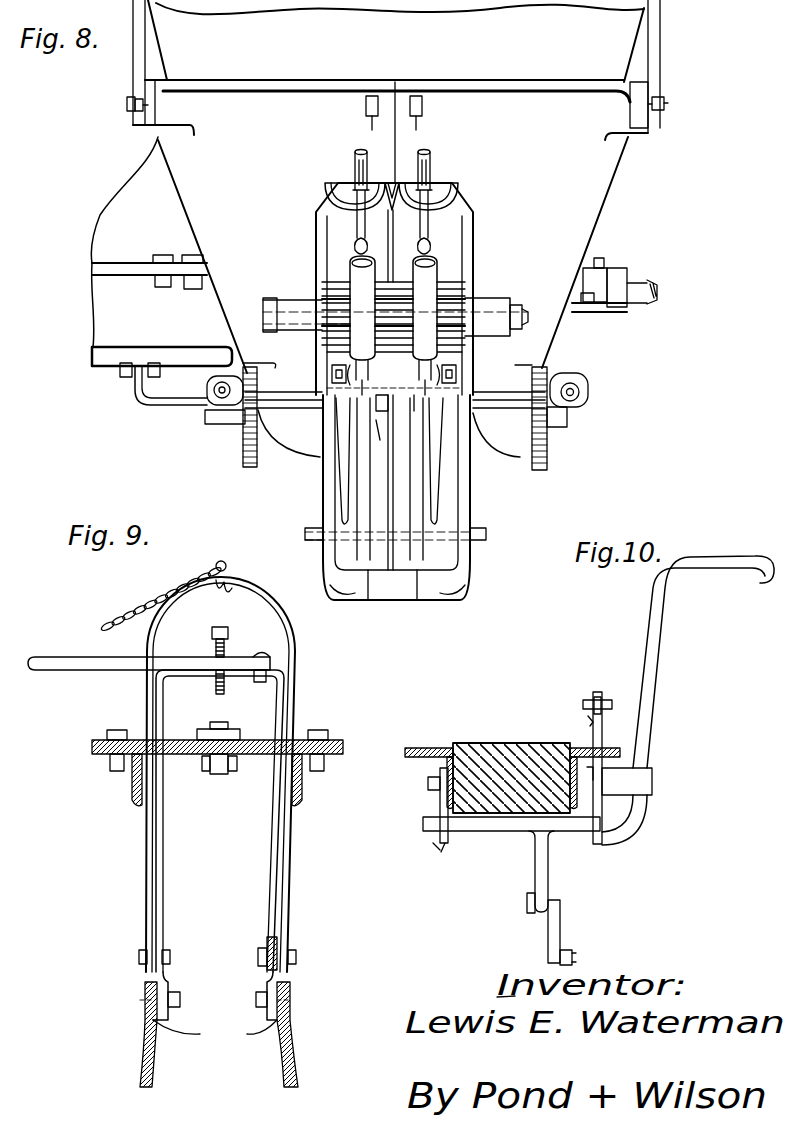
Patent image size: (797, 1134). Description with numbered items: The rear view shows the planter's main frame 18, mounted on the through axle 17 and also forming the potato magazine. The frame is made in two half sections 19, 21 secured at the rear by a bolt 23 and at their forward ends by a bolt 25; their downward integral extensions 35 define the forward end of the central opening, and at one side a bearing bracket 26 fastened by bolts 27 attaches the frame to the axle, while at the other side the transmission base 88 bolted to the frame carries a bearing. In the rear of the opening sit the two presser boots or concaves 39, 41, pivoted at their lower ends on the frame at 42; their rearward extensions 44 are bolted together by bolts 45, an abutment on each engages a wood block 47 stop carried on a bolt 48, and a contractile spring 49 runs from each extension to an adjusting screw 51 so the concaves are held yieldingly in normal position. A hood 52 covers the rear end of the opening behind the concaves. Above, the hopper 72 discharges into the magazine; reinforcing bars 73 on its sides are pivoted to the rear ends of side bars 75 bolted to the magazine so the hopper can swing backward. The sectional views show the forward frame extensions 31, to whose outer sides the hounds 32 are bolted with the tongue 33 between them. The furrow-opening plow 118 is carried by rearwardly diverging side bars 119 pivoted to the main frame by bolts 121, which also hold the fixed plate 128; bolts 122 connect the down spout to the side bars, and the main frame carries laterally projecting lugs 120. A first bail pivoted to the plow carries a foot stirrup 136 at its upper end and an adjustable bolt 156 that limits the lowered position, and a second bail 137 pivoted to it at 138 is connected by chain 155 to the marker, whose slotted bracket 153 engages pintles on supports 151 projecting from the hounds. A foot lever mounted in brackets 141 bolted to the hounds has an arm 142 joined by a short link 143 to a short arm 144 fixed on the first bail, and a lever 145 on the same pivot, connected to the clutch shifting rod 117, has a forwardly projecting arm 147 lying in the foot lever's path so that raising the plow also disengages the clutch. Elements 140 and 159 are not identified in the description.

In FIG. 8, the axle 17 is at (657, 298).
In FIG. 8, the main frame 18 is at (622, 192).
In FIG. 8, the frame half section 19 is at (270, 150).
In FIG. 8, the frame half section 21 is at (589, 85).
In FIG. 8, the bolt 23 is at (424, 108).
In FIG. 9, the bolt 25 is at (203, 762).
In FIG. 8, the bearing bracket 26 is at (612, 313).
In FIG. 8, the bolts 27 is at (600, 265).
In FIG. 9, the forward integral extensions 31 is at (96, 738).
In FIG. 9, the hounds 32 is at (132, 784).
In FIG. 10, the hounds 32 is at (428, 748).
In FIG. 10, the tongue 33 is at (510, 743).
In FIG. 8, the downward integral extensions 35 is at (472, 508).
In FIG. 8, the presser boot or concave 39 is at (335, 482).
In FIG. 8, the presser boot or concave 41 is at (452, 487).
In FIG. 8, the pivot 42 is at (303, 536).
In FIG. 8, the rearward extensions 44 is at (383, 417).
In FIG. 8, the bolts 45 is at (331, 373).
In FIG. 8, the wood block 47 is at (462, 293).
In FIG. 8, the bolt 48 is at (408, 316).
In FIG. 8, the contractile spring 49 is at (355, 276).
In FIG. 8, the adjusting screw 51 is at (358, 212).
In FIG. 8, the hood 52 is at (396, 183).
In FIG. 8, the hopper 72 is at (400, 31).
In FIG. 8, the reinforcing bars 73 is at (652, 47).
In FIG. 8, the side bars 75 is at (630, 118).
In FIG. 8, the base 88 is at (161, 251).
In FIG. 10, the operating rod 117 is at (604, 700).
In FIG. 9, the furrow-opening plow 118 is at (297, 1075).
In FIG. 8, the side bars 119 is at (548, 446).
In FIG. 9, the side bars 119 is at (215, 1033).
In FIG. 8, the lugs 120 is at (237, 430).
In FIG. 8, the bolts 121 is at (205, 392).
In FIG. 8, the bolts 122 is at (570, 406).
In FIG. 8, the fixed plate 128 is at (580, 384).
In FIG. 9, the foot stirrup 136 is at (58, 657).
In FIG. 9, the second bail 137 is at (295, 660).
In FIG. 9, the pivot 138 is at (139, 957).
In FIG. 10, the bolt 140 is at (559, 957).
In FIG. 10, the brackets 141 is at (445, 845).
In FIG. 10, the arm 142 is at (540, 873).
In FIG. 10, the short link 143 is at (560, 927).
In FIG. 9, the short projecting arm 144 is at (268, 946).
In FIG. 10, the lever 145 is at (593, 732).
In FIG. 10, the forwardly projecting arm 147 is at (653, 776).
In FIG. 9, the supports 151 is at (275, 872).
In FIG. 9, the slotted bracket 153 is at (256, 1000).
In FIG. 9, the chain 155 is at (128, 596).
In FIG. 9, the adjustable bolt 156 is at (216, 690).
In FIG. 10, the handle 159 is at (660, 673).